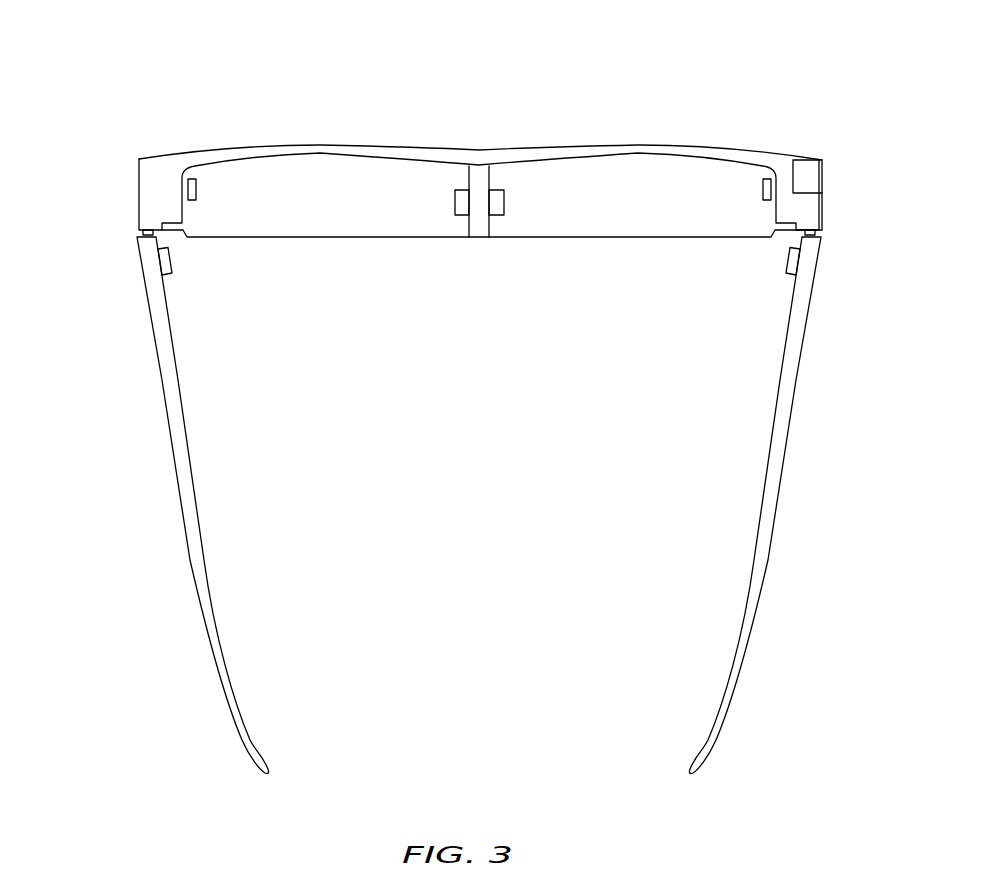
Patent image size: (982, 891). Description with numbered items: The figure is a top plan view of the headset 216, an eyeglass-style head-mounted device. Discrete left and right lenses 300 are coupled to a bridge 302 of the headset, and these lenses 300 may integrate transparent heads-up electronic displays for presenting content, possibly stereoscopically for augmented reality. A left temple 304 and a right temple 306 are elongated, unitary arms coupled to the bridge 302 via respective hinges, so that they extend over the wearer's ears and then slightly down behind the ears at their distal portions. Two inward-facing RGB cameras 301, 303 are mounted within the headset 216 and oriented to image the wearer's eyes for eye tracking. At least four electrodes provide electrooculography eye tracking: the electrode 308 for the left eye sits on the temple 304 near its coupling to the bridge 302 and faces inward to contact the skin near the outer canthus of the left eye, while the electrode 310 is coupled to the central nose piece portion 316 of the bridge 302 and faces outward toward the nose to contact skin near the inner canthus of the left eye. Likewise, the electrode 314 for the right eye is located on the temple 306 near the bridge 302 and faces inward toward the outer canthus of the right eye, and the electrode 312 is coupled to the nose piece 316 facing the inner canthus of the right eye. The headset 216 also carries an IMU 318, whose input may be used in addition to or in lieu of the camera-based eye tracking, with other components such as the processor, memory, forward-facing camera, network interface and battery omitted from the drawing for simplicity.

The headset 216 is at (104, 76).
The lenses 300 is at (668, 229).
The inward-facing RGB camera 301 is at (197, 190).
The bridge 302 is at (310, 151).
The inward-facing RGB camera 303 is at (763, 190).
The left temple 304 is at (162, 419).
The right temple 306 is at (797, 408).
The electrode 308 is at (171, 260).
The electrode 310 is at (455, 201).
The electrode 312 is at (505, 203).
The electrode 314 is at (787, 262).
The central nose piece portion 316 is at (479, 237).
The IMU 318 is at (822, 177).